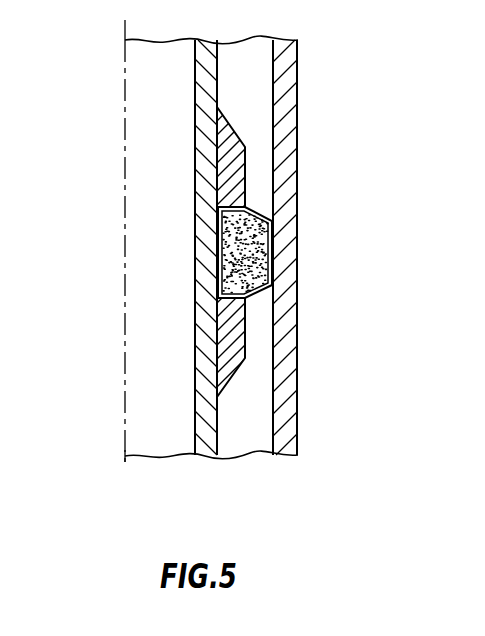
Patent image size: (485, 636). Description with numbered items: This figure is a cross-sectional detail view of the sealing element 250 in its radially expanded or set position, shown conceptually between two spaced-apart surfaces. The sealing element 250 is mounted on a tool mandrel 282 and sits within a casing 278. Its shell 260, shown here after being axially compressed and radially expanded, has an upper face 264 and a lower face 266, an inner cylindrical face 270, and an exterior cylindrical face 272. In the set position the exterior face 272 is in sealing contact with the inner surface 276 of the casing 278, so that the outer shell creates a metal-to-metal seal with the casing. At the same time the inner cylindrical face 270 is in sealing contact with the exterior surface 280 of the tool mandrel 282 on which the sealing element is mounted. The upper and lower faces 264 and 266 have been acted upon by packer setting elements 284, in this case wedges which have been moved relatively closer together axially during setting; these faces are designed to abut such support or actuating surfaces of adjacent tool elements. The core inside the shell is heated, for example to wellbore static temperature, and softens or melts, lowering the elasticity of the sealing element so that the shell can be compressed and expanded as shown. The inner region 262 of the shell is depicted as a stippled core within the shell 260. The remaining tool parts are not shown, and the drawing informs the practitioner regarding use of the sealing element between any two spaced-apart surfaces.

The sealing element 250 is at (273, 235).
The shell 260 is at (240, 297).
The inner layer of sealing element 262 is at (260, 250).
The upper face 264 is at (224, 203).
The lower face 266 is at (220, 318).
The inner cylindrical face 270 is at (218, 250).
The exterior cylindrical face 272 is at (248, 299).
The inner surface 276 is at (280, 131).
The casing 278 is at (297, 157).
The exterior surface 280 is at (217, 81).
The tool mandrel 282 is at (218, 408).
The packer setting elements 284 is at (245, 183).